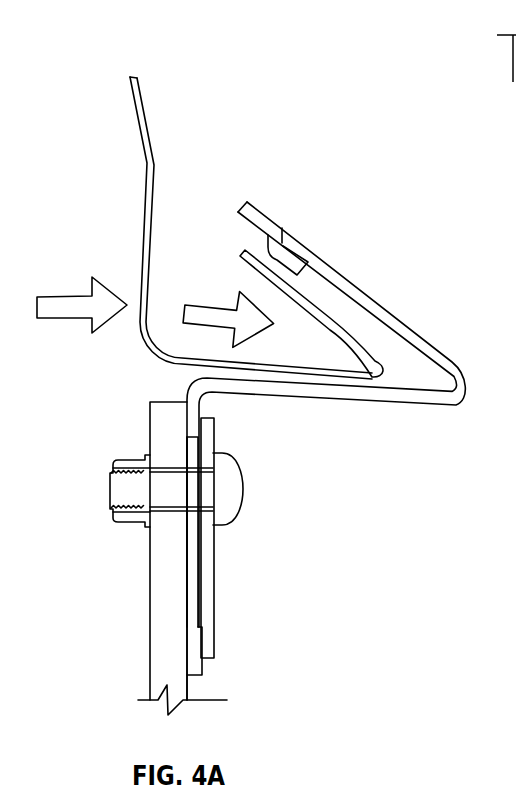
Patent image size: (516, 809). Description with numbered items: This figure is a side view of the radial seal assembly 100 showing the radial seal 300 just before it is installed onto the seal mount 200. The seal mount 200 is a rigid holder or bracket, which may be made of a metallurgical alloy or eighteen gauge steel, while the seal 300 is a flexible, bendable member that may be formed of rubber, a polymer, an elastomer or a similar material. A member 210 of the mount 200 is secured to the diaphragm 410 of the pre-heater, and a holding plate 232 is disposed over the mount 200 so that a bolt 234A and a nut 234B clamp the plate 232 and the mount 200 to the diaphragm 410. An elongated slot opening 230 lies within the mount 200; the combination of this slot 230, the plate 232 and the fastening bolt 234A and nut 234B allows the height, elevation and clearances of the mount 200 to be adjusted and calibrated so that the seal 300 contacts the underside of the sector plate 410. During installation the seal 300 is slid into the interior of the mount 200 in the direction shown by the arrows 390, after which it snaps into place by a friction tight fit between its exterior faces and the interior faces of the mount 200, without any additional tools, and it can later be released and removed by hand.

The radial seal assembly 100 is at (254, 146).
The seal mount 200 is at (330, 268).
The member 210 is at (203, 665).
The elongated slot opening 230 is at (192, 540).
The holding plate 232 is at (214, 573).
The bolt 234A is at (243, 487).
The nut 234B is at (128, 527).
The radial seal 300 is at (148, 127).
The arrows 390 is at (82, 297).
The diaphragm 410 is at (167, 628).